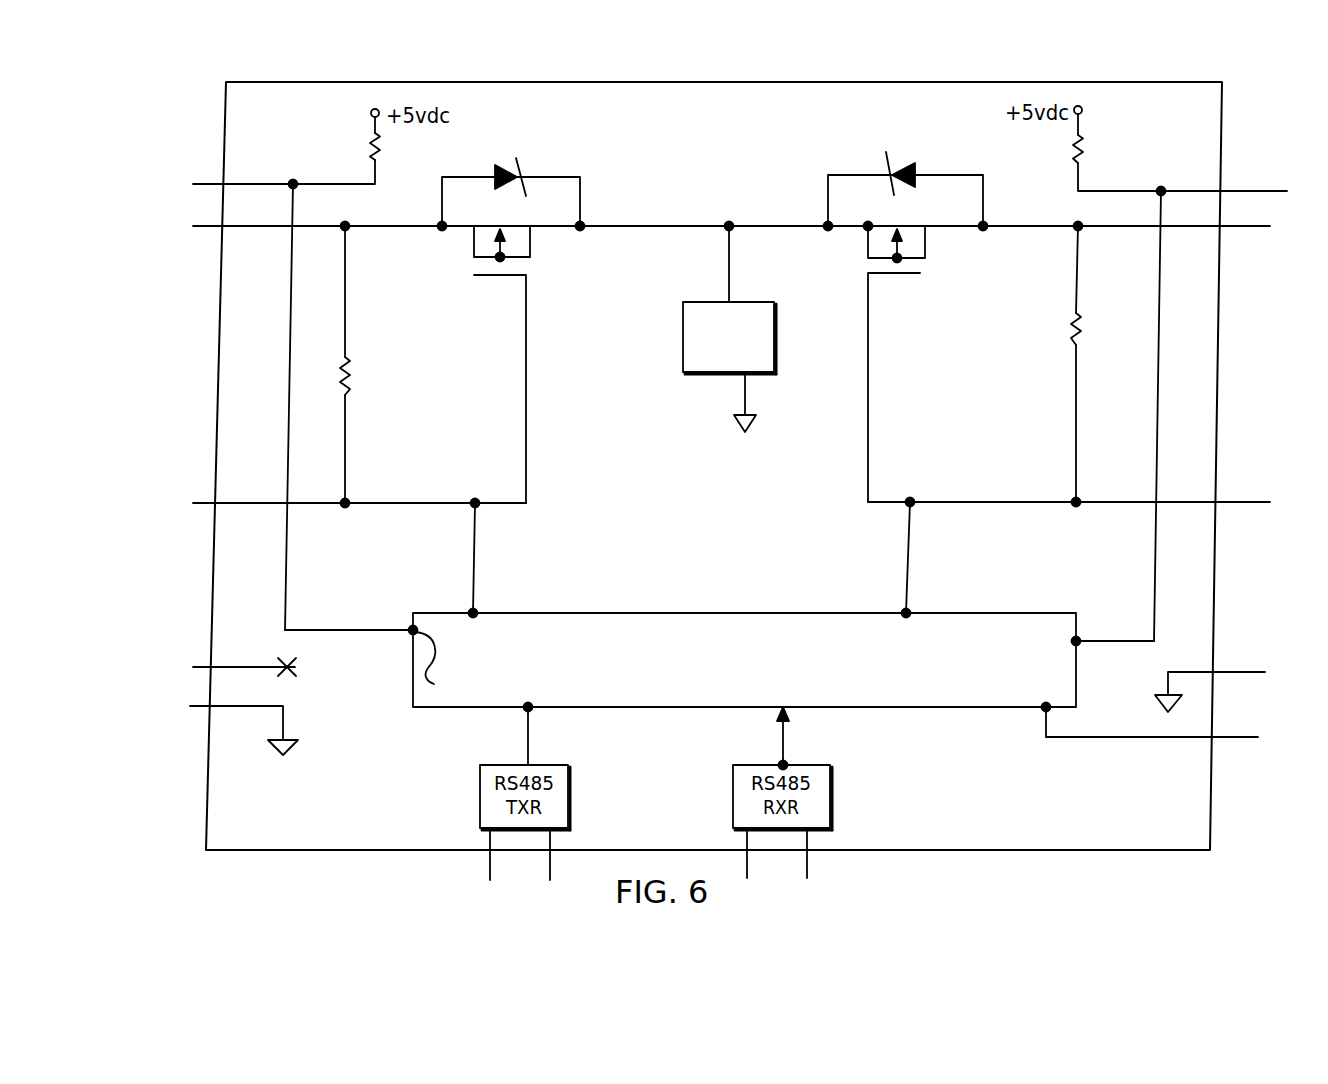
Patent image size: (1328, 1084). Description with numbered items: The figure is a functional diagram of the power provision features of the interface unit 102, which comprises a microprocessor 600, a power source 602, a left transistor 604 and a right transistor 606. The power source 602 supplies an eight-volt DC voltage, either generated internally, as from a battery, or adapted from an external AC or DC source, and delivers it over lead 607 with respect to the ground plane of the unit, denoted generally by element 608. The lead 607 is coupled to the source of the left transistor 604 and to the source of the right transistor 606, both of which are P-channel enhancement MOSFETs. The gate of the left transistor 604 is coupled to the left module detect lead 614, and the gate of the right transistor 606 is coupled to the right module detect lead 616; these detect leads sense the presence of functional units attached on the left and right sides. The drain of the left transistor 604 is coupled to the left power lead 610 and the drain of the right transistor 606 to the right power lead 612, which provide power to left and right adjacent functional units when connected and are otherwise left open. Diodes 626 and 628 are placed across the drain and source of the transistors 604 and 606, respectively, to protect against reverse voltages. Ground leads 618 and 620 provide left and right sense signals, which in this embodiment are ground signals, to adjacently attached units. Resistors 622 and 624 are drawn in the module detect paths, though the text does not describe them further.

The interface unit 102 is at (777, 68).
The microprocessor 600 is at (748, 612).
The power source 602 is at (707, 374).
The left transistor 604 is at (495, 278).
The right transistor 606 is at (908, 277).
The lead 607 is at (731, 290).
The ground plane 608 is at (753, 423).
The left power lead 610 is at (205, 229).
The right power lead 612 is at (1242, 228).
The left module detect lead 614 is at (206, 505).
The right module detect lead 616 is at (1243, 505).
The ground lead 618 is at (197, 708).
The ground lead 620 is at (1244, 676).
The left pull-up resistor 622 is at (348, 378).
The right pull-up resistor 624 is at (1080, 318).
The diode 626 is at (516, 158).
The diode 628 is at (905, 128).